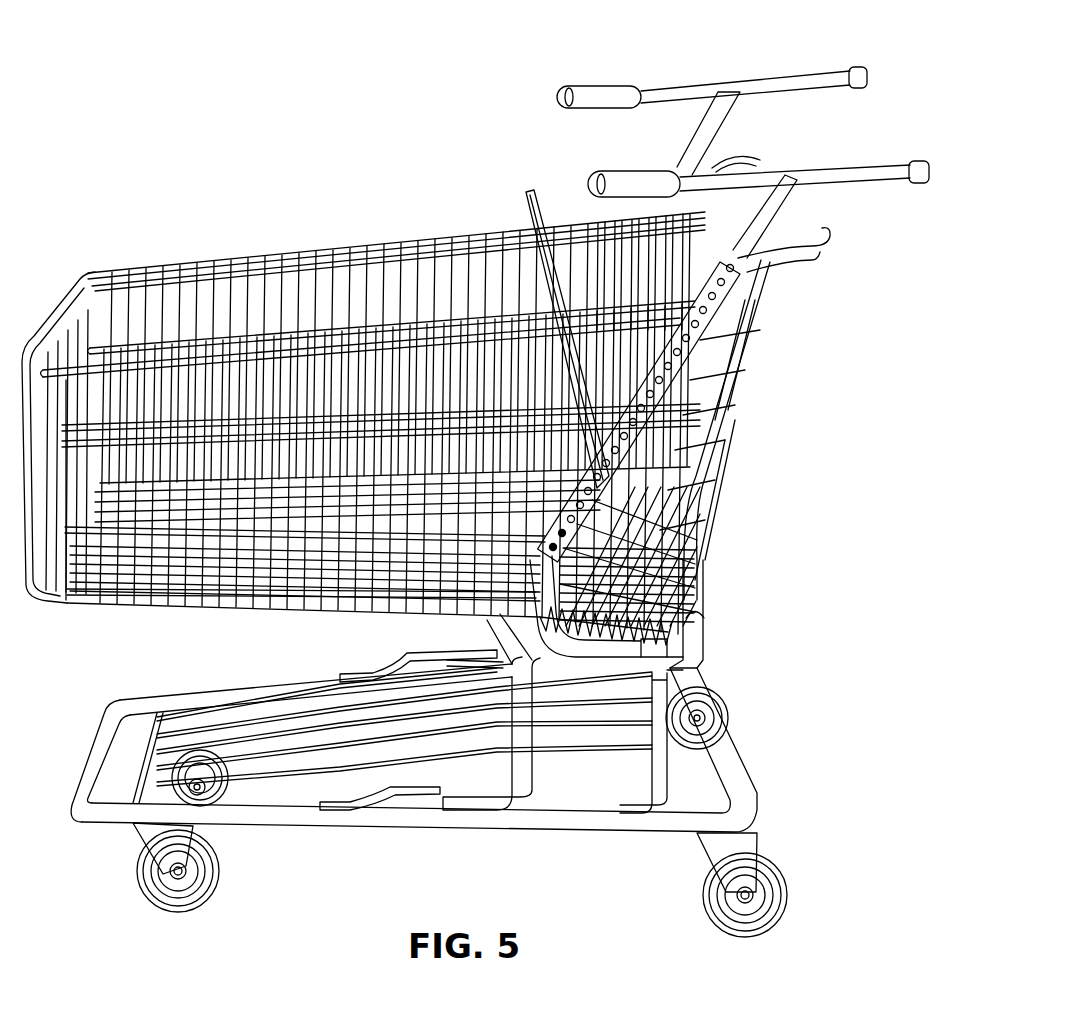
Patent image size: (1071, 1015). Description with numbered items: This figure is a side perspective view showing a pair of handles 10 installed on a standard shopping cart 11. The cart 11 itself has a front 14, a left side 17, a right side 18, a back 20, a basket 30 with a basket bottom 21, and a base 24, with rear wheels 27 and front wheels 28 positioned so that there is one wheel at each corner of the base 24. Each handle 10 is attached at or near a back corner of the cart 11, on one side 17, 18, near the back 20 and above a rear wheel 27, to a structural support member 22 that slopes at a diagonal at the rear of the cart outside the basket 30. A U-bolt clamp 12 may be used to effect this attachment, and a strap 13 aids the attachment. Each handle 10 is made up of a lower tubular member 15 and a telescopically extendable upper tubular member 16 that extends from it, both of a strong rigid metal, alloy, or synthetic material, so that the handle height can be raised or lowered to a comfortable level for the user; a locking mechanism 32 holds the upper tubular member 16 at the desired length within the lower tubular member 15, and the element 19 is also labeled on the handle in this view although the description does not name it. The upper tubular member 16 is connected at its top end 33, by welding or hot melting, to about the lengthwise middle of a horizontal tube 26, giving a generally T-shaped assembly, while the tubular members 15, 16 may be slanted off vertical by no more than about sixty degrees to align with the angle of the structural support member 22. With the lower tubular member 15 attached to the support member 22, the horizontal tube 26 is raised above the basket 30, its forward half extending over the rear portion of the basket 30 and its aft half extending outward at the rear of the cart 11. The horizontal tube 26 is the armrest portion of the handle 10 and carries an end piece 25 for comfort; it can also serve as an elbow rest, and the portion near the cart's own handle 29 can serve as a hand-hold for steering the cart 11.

The handle 10 is at (858, 60).
The shopping cart 11 is at (118, 252).
The U-bolt clamp 12 is at (686, 614).
The strap 13 is at (640, 228).
The front 14 is at (70, 322).
The lower tubular member 15 is at (672, 165).
The extendable upper tubular member 16 is at (690, 142).
The left side 17 is at (290, 340).
The right side 18 is at (395, 250).
The adjustment holes 19 is at (660, 455).
The back 20 is at (765, 312).
The basket bottom 21 is at (250, 617).
The structural support member 22 is at (700, 352).
The base 24 is at (325, 700).
The end piece 25 is at (575, 92).
The horizontal tube 26 is at (660, 88).
The rear wheel 27 is at (785, 888).
The front wheel 28 is at (140, 862).
The handle of the cart 29 is at (830, 245).
The basket 30 is at (290, 250).
The locking mechanism 32 is at (600, 478).
The top end 33 is at (785, 152).